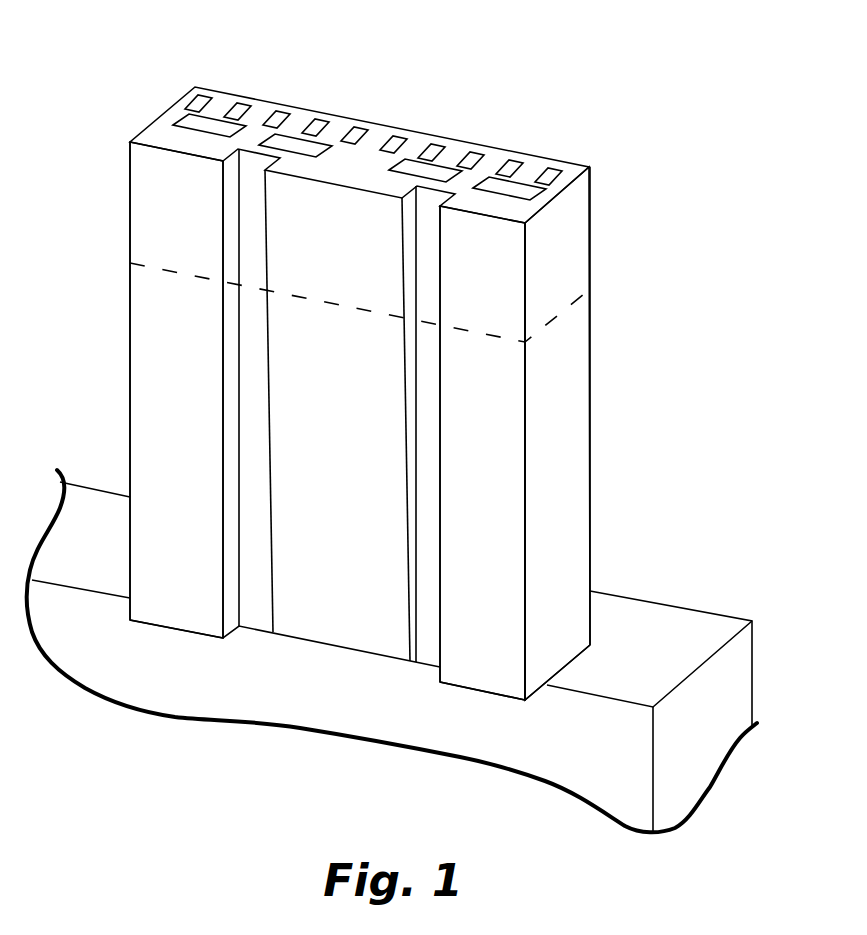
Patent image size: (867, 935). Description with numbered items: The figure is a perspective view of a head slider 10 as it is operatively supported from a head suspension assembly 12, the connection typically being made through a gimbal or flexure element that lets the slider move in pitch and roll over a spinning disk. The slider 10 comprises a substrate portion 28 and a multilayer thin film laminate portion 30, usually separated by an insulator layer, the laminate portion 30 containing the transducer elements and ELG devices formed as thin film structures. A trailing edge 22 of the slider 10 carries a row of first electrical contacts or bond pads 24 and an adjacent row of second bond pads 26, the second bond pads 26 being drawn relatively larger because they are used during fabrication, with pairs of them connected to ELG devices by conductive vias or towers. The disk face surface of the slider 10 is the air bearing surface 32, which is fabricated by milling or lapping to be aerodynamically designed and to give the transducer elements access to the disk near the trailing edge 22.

The head slider 10 is at (572, 331).
The head suspension assembly 12 is at (687, 630).
The trailing edge 22 is at (372, 153).
The first electrical contacts or bond pads 24 is at (215, 93).
The second electrical contacts or bond pads 26 is at (196, 121).
The substrate portion 28 is at (589, 477).
The multilayer thin film laminate portion 30 is at (580, 229).
The air bearing surface 32 is at (160, 395).